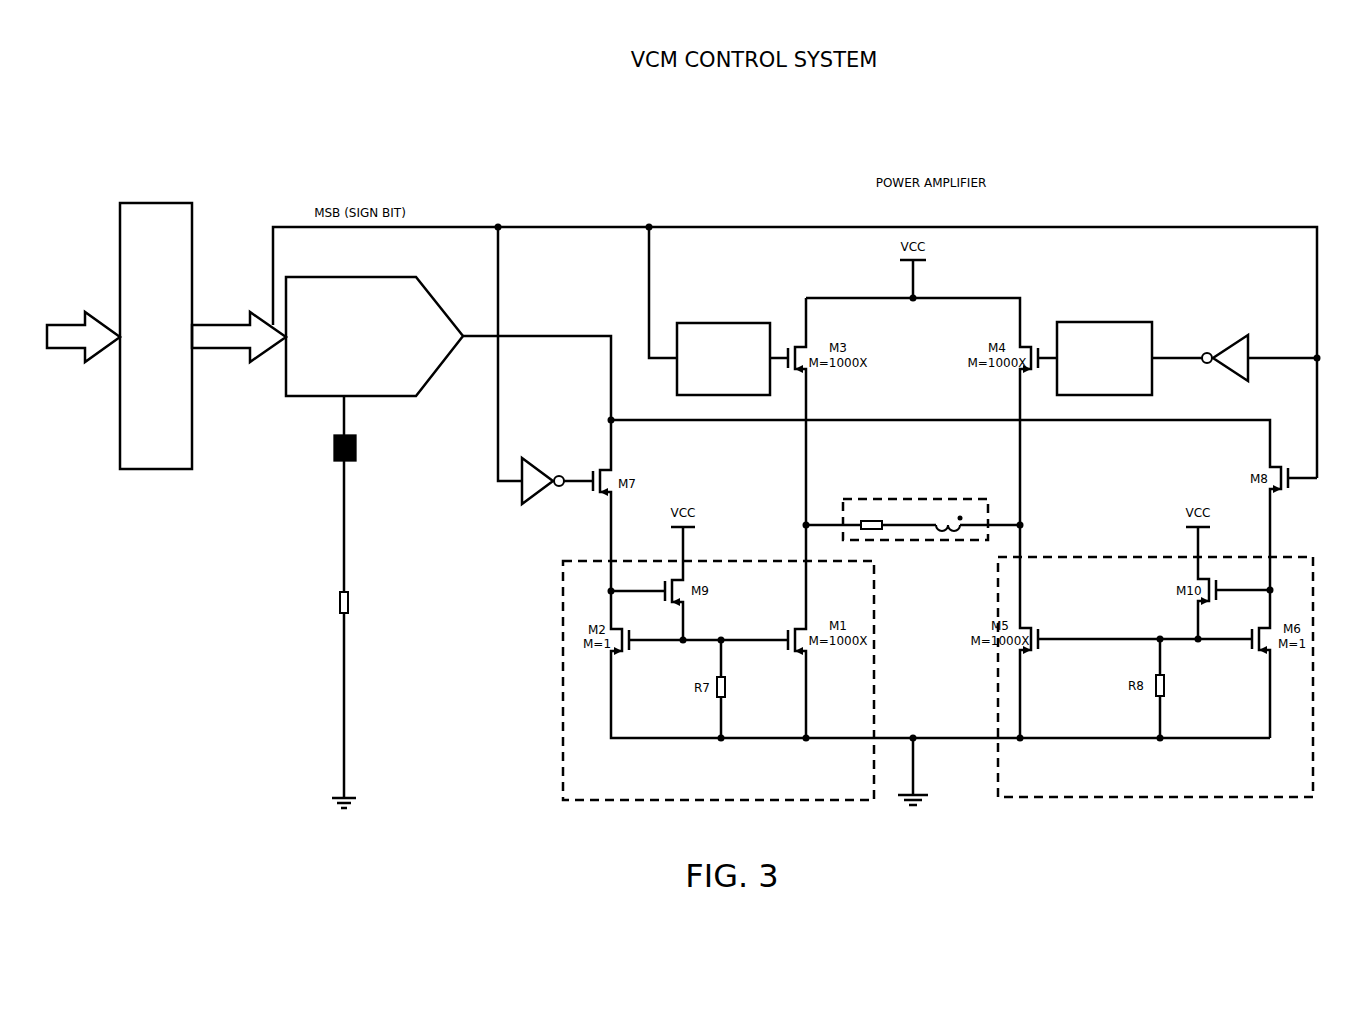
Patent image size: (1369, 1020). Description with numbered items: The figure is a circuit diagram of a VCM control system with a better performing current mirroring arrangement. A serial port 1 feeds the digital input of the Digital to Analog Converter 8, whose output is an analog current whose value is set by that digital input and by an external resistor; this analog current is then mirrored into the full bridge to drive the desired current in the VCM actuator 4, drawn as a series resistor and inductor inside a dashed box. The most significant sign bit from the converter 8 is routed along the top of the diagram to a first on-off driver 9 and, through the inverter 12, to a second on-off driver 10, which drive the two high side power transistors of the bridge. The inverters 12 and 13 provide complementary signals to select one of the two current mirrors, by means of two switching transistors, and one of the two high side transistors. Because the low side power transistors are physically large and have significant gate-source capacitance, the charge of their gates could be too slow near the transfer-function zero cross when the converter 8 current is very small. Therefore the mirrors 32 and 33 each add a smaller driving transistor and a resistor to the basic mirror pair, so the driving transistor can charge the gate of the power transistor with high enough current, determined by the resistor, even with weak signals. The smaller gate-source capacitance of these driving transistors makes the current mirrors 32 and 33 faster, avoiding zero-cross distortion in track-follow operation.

The serial port 1 is at (192, 250).
The Digital to Analog Converter 8 is at (418, 286).
The on-off driver 9 is at (750, 323).
The on-off driver 10 is at (1130, 322).
The inverter 12 is at (1225, 335).
The inverter 13 is at (561, 476).
The VCM actuator 4 is at (970, 499).
The current mirror 32 is at (563, 712).
The current mirror 33 is at (1158, 557).